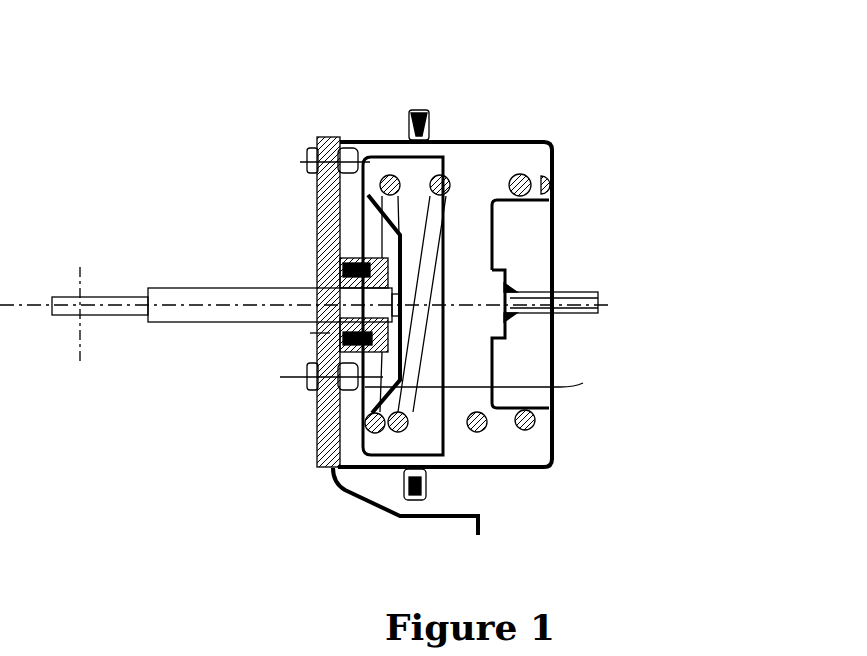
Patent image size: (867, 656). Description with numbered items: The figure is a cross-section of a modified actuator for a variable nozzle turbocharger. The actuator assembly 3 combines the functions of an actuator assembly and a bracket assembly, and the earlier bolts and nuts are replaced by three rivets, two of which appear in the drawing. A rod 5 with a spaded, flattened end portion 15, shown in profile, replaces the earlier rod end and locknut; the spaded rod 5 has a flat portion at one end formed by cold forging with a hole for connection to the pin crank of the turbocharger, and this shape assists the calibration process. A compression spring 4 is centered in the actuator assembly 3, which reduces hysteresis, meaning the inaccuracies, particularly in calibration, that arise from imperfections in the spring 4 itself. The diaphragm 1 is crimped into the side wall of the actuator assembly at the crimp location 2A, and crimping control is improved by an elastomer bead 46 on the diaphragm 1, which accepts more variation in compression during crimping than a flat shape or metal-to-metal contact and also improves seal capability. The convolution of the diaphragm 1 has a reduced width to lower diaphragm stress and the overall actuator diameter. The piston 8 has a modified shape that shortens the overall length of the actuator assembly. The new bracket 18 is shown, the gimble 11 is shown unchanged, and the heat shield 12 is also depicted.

The diaphragm 1 is at (372, 455).
The housing 2A is at (410, 110).
The actuator assembly 3 is at (455, 462).
The compression spring 4 is at (520, 178).
The rod 5 is at (222, 322).
The piston 8 is at (418, 447).
The gimble 11 is at (338, 272).
The heat shield 12 is at (480, 500).
The spaded end portion 15 is at (112, 315).
The bracket 18 is at (316, 210).
The elastomer bead 46 is at (431, 118).